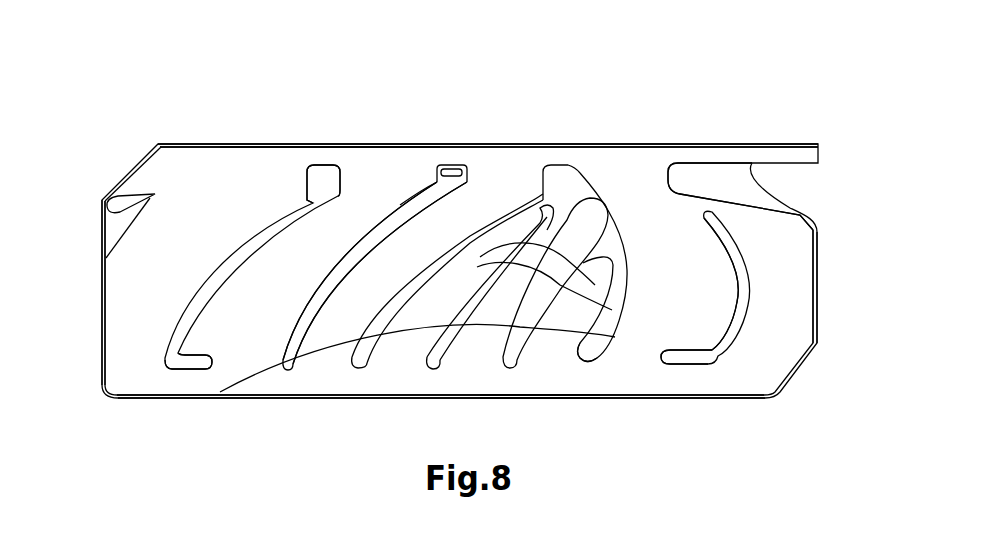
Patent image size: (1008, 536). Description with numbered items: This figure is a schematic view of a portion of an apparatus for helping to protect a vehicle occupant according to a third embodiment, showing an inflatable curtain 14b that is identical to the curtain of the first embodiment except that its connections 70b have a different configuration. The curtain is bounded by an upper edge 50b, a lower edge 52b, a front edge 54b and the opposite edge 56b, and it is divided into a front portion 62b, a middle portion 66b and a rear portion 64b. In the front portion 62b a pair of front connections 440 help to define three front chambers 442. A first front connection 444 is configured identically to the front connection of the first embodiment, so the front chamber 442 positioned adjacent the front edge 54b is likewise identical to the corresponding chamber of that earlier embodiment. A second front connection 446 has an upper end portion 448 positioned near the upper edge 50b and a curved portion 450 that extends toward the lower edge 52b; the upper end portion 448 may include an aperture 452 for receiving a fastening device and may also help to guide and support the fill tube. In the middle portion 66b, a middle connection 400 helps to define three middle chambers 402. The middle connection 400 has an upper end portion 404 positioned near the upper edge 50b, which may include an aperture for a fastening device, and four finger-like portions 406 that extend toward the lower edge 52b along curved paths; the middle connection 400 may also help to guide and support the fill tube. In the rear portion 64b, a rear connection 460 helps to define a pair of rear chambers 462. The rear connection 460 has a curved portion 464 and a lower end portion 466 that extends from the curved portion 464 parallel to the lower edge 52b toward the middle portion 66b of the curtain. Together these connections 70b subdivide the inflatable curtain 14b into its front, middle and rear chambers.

The inflatable curtain 14b is at (194, 104).
The upper edge 50b is at (495, 147).
The lower edge 52b is at (302, 399).
The front edge 54b is at (101, 325).
The right side wall 56b is at (819, 263).
The front portion 62b is at (192, 255).
The rear portion 64b is at (665, 210).
The middle portion 66b is at (533, 383).
The connections 70b is at (283, 365).
The middle connection 400 is at (560, 165).
The middle chambers 402 is at (407, 333).
The upper end portion 404 is at (580, 185).
The finger-like portions 406 is at (507, 263).
The front connections 440 is at (368, 233).
The front chambers 442 is at (435, 222).
The first front connection 444 is at (233, 267).
The second front connection 446 is at (303, 311).
The upper end portion 448 is at (420, 175).
The curved portion 450 is at (343, 268).
The aperture 452 is at (455, 163).
The rear connection 460 is at (745, 263).
The rear chambers 462 is at (717, 313).
The curved portion 464 is at (724, 243).
The lower end portion 466 is at (667, 357).